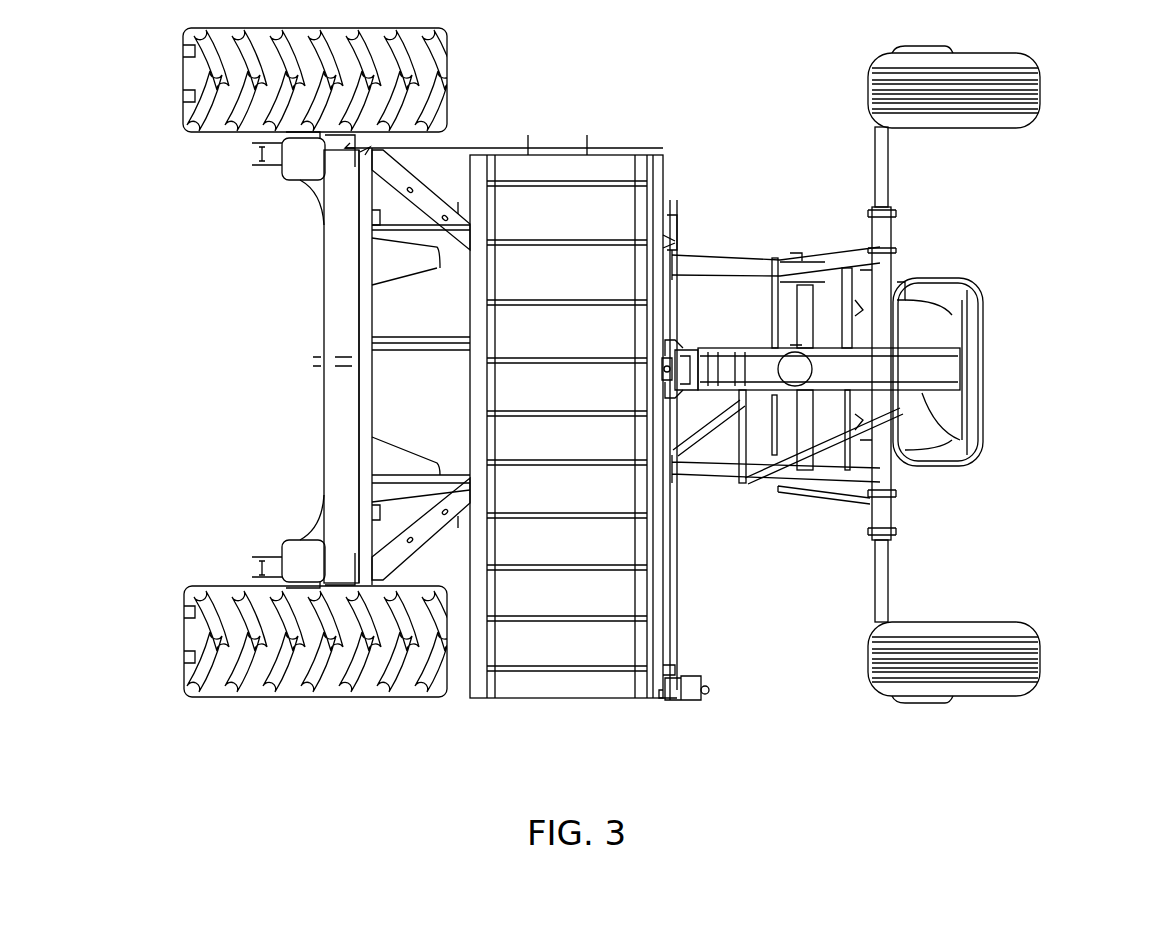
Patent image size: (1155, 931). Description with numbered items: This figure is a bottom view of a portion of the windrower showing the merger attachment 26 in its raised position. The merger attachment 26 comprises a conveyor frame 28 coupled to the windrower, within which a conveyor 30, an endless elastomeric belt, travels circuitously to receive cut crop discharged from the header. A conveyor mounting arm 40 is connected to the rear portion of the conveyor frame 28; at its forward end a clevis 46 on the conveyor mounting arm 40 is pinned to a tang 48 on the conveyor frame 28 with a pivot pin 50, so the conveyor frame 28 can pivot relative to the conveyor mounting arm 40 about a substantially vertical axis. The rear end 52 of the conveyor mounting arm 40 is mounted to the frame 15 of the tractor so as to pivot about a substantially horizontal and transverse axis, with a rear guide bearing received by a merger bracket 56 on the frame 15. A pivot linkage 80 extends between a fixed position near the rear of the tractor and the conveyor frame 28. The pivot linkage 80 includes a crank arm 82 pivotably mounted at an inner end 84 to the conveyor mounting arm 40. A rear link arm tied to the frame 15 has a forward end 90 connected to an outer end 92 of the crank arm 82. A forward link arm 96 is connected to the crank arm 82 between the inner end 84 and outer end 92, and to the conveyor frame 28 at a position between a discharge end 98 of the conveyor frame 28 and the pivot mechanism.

The frame 15 is at (922, 467).
The merger attachment 26 is at (809, 613).
The conveyor frame 28 is at (678, 632).
The conveyor 30 is at (568, 702).
The conveyor mounting arm 40 is at (913, 345).
The clevis 46 is at (688, 348).
The tang 48 is at (680, 347).
The pivot pin 50 is at (683, 378).
The rear end 52 is at (963, 370).
The merger bracket 56 is at (953, 442).
The pivot linkage 80 is at (770, 483).
The crank arm 82 is at (727, 463).
The inner end 84 is at (688, 405).
The forward end 90 is at (752, 487).
The outer end 92 is at (738, 470).
The forward link arm 96 is at (710, 435).
The discharge end 98 is at (620, 702).